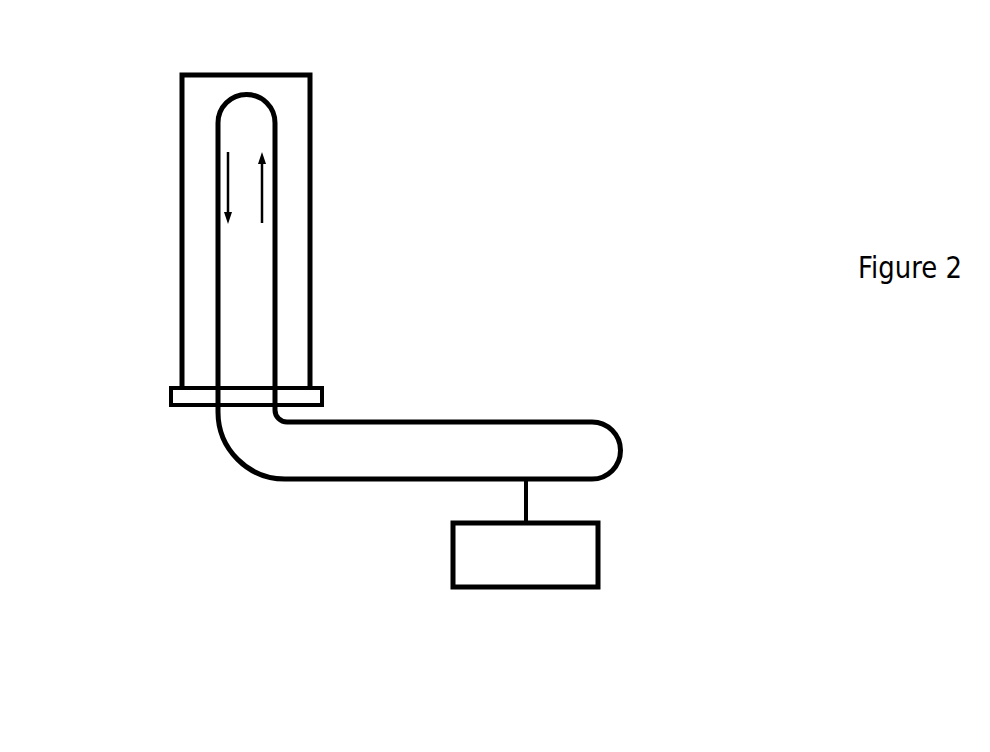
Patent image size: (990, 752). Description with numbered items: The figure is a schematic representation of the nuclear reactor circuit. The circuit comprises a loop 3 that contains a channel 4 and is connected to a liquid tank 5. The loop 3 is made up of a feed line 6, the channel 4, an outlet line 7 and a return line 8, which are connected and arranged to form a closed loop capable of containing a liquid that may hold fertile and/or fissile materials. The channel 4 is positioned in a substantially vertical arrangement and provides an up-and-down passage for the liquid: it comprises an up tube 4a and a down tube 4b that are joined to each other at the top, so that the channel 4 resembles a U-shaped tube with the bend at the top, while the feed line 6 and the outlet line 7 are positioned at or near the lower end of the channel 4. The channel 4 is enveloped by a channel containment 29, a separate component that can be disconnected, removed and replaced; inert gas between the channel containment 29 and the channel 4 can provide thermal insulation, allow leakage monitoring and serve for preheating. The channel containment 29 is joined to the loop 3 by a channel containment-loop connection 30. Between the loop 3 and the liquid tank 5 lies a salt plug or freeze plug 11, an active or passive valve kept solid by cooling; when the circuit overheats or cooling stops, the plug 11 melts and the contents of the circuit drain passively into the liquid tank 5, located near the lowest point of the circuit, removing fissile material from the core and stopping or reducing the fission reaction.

The loop 3 is at (273, 460).
The channel 4 is at (256, 254).
The up tube 4a is at (277, 157).
The down tube 4b is at (218, 232).
The channel containment 29 is at (310, 186).
The channel containment-loop connection 30 is at (245, 395).
The feed line 6 is at (487, 422).
The outlet line 7 is at (399, 479).
The return line 8 is at (620, 450).
The salt plug (freeze plug) 11 is at (526, 503).
The liquid tank 5 is at (526, 566).